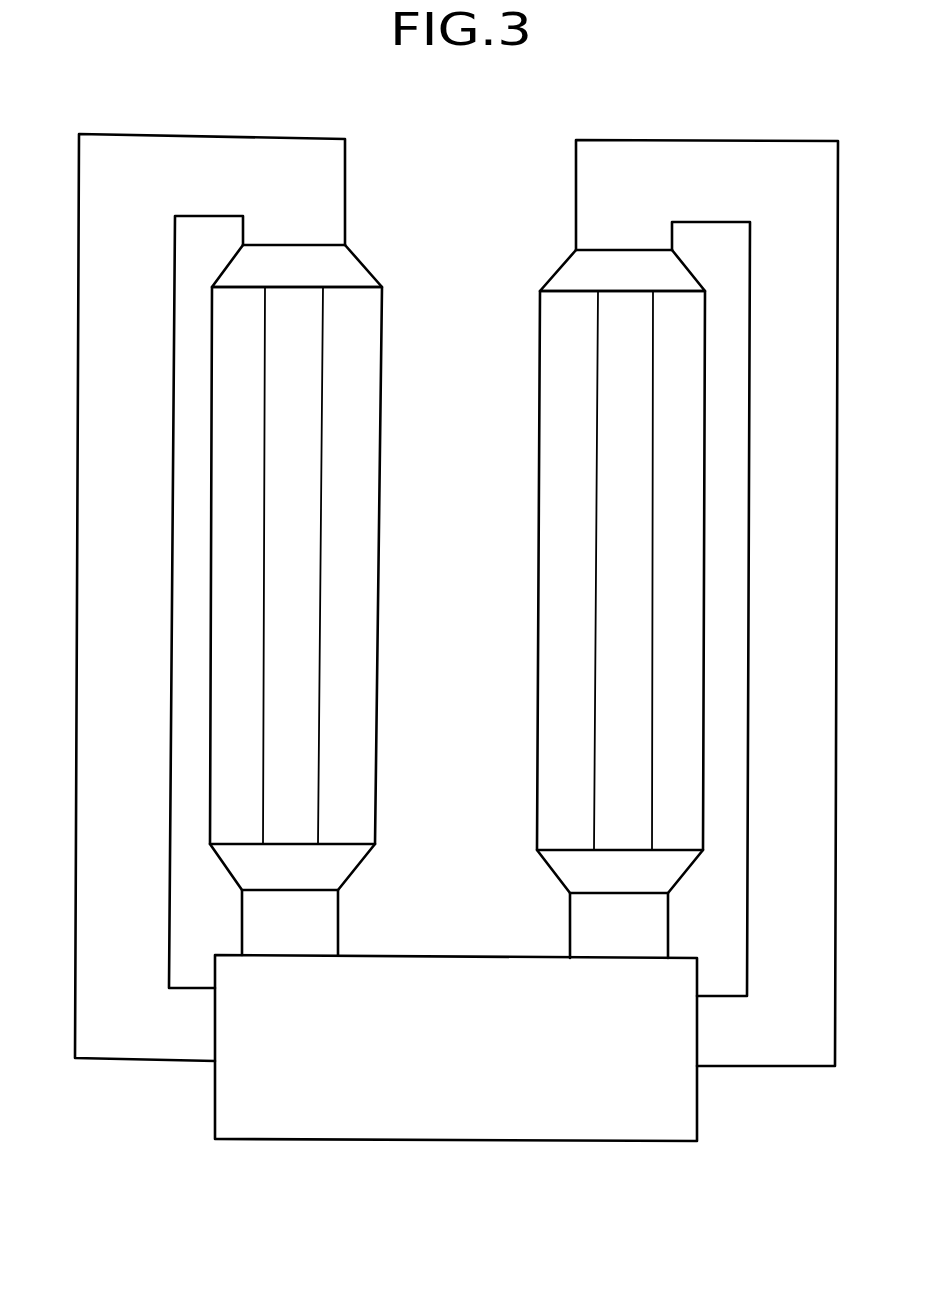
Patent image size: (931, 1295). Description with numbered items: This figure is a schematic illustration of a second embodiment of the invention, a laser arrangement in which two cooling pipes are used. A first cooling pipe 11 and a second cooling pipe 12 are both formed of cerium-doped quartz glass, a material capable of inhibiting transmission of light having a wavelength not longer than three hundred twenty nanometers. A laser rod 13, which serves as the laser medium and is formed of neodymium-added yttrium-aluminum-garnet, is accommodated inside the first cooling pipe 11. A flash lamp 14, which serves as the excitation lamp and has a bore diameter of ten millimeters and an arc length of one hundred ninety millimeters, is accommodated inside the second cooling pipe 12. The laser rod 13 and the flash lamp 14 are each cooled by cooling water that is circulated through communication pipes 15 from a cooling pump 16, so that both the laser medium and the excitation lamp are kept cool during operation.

The first cooling pipe 11 is at (377, 711).
The second cooling pipe 12 is at (537, 790).
The laser rod 13 is at (305, 382).
The flash lamp 14 is at (620, 500).
The communication pipes 15 is at (347, 157).
The cooling pump 16 is at (468, 1143).